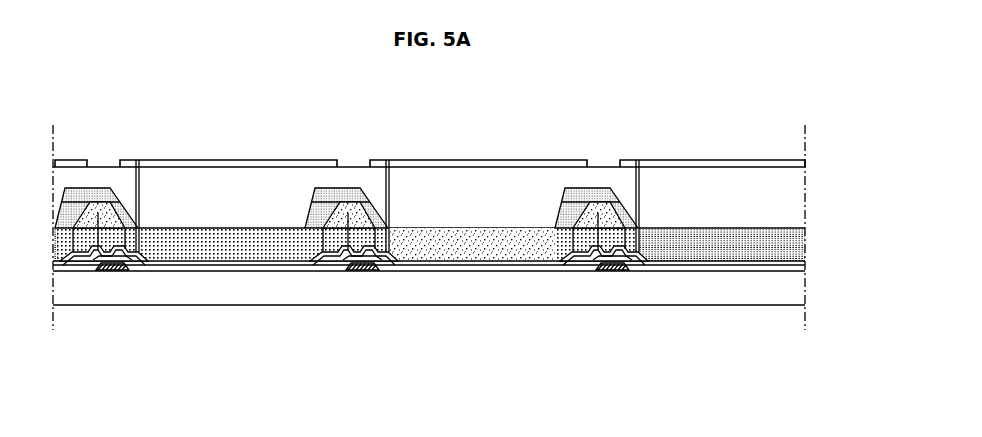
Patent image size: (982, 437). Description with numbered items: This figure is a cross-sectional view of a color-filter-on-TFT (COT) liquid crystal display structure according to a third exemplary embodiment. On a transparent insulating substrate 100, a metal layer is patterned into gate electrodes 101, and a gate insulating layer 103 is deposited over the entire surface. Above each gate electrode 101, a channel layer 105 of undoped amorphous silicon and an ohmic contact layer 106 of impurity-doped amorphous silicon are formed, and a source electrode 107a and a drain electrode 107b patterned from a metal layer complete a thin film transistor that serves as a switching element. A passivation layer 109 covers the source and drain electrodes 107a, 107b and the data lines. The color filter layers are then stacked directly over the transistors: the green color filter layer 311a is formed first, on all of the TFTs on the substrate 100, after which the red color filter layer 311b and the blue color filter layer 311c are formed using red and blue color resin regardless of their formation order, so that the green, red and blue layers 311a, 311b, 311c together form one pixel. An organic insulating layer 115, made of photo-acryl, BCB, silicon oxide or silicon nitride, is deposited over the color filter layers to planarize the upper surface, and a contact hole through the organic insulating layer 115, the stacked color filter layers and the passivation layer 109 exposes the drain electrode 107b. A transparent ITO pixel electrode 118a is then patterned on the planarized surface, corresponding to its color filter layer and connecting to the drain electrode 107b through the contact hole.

The transparent insulating substrate 100 is at (806, 289).
The gate electrode 101 is at (612, 272).
The gate insulating layer 103 is at (806, 267).
The channel layer 105 is at (640, 258).
The ohmic contact layer 106 is at (581, 258).
The source electrode 107a is at (598, 213).
The drain electrode 107b is at (622, 224).
The passivation layer 109 is at (806, 262).
The organic insulating layer 115 is at (806, 193).
The pixel electrode 118a is at (724, 165).
The green color filter layer 311a is at (232, 262).
The red color filter layer 311b is at (497, 262).
The blue color filter layer 311c is at (58, 262).